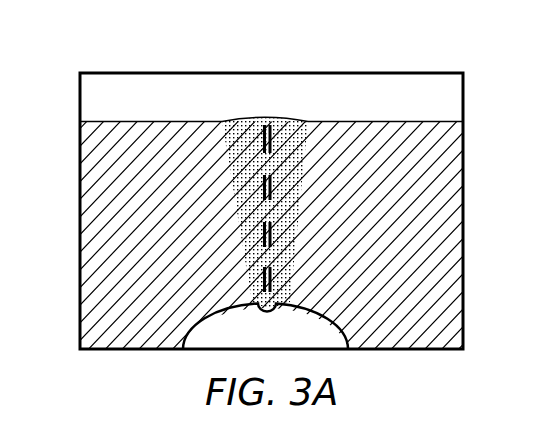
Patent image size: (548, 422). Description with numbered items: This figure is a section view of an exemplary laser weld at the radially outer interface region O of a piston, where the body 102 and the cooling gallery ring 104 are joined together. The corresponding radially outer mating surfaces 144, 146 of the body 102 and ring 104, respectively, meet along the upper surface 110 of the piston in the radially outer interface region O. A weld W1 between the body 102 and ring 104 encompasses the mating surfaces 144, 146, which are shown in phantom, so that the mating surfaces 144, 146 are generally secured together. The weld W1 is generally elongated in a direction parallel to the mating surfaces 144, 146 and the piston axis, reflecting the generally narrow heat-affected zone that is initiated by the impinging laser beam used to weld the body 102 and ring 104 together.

The cooling gallery ring 104 is at (395, 187).
The upper surface 110 is at (140, 121).
The weld W1 is at (290, 143).
The radially outer interface region O is at (236, 92).
The body 102 is at (153, 298).
The radially outer mating surface of the body 144 is at (263, 282).
The radially outer mating surface of the ring 146 is at (272, 275).